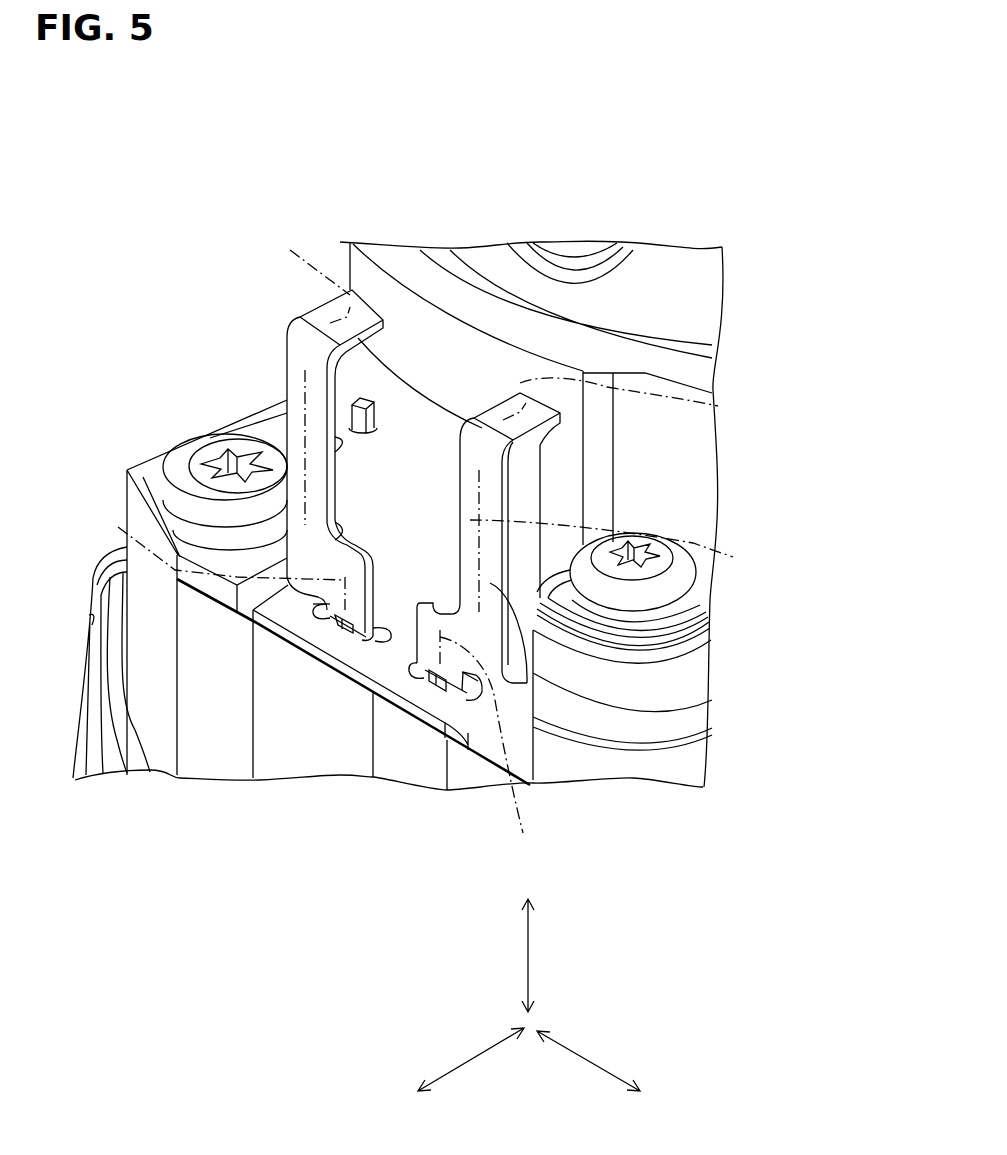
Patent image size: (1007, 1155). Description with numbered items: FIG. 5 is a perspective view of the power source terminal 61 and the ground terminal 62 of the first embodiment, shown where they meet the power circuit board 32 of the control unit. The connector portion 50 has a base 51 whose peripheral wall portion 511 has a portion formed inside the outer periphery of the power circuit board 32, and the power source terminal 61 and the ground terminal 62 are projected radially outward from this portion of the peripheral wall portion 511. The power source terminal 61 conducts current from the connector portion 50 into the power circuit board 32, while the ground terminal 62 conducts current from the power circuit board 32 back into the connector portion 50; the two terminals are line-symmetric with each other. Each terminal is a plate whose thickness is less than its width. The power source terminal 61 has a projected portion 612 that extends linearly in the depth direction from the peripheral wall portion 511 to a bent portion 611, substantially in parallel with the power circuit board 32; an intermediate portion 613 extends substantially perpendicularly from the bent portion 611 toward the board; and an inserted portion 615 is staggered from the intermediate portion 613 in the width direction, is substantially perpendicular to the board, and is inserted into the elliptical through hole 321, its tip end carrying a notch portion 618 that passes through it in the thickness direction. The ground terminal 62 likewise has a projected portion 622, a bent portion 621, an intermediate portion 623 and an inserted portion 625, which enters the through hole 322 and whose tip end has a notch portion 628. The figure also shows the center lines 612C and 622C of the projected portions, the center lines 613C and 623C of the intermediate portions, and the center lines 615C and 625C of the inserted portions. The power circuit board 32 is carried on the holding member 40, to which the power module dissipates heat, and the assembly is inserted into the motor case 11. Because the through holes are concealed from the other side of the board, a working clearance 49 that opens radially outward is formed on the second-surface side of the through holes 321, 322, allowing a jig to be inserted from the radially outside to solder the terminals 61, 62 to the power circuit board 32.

The motor case 11 is at (85, 733).
The power circuit board 32 is at (353, 728).
The through hole 321 is at (443, 680).
The through hole 322 is at (337, 620).
The holding member 40 is at (143, 618).
The working clearance 49 is at (355, 760).
The connector portion 50 is at (727, 291).
The base 51 is at (670, 307).
The peripheral wall portion 511 is at (370, 273).
The power source terminal 61 is at (596, 619).
The bent portion 611 is at (490, 447).
The projected portion 612 is at (543, 413).
The center line 612C is at (639, 399).
The intermediate portion 613 is at (460, 710).
The center line 613C is at (627, 549).
The inserted portion 615 is at (433, 625).
The center line 615C is at (503, 745).
The notch portion 618 is at (443, 692).
The ground terminal 62 is at (231, 536).
The bent portion 621 is at (305, 337).
The projected portion 622 is at (333, 305).
The center line 622C is at (300, 273).
The intermediate portion 623 is at (297, 423).
The center line 623C is at (293, 371).
The inserted portion 625 is at (352, 572).
The center line 625C is at (202, 562).
The notch portion 628 is at (352, 625).